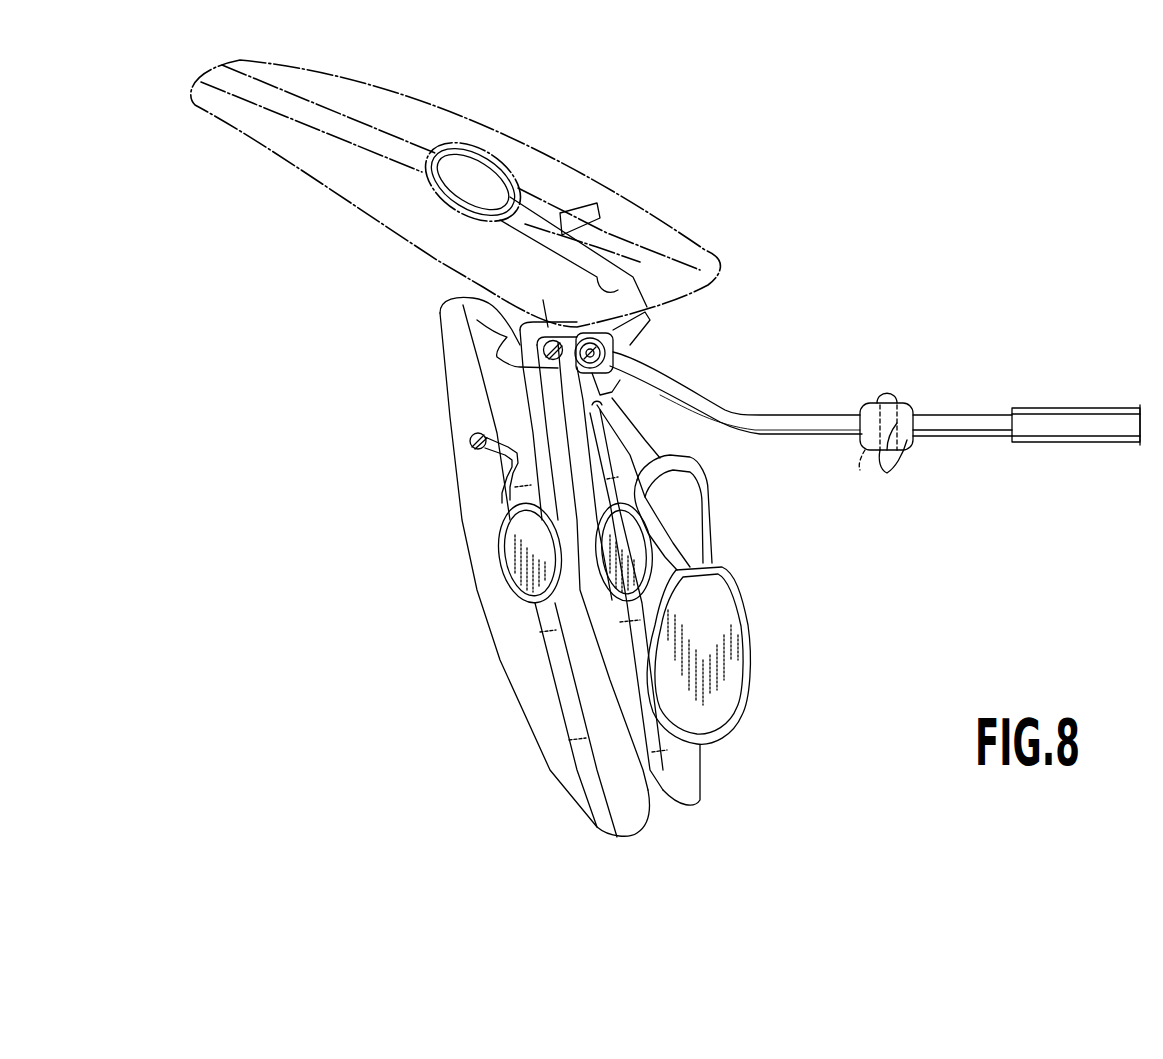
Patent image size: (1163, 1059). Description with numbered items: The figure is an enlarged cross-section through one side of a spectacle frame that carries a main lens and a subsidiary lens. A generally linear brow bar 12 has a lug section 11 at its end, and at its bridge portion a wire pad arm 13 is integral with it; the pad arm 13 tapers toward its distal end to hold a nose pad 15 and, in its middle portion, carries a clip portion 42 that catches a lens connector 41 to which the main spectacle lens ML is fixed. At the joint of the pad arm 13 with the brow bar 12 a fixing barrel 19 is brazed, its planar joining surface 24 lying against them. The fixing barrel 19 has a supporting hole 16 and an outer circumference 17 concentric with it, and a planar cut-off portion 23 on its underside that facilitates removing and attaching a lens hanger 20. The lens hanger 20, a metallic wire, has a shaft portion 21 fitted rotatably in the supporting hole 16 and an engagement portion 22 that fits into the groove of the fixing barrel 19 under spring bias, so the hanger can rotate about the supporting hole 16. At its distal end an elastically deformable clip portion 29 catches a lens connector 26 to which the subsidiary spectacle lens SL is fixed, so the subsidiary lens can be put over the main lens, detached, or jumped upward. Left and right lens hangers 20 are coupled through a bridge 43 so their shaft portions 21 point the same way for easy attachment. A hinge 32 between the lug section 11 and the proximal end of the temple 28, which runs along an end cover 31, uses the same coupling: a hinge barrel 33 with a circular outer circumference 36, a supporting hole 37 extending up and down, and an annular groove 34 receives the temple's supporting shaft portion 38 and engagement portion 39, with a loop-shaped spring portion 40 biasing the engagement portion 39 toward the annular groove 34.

The lug section 11 is at (768, 412).
The brow bar 12 is at (455, 317).
The pad arm 13 is at (712, 535).
The nose pad 15 is at (745, 655).
The supporting hole 16 is at (617, 345).
The outer circumference 17 is at (614, 358).
The fixing barrel 19 is at (600, 290).
The lens hanger 20 is at (543, 300).
The shaft portion 21 is at (622, 578).
The engagement portion 22 is at (640, 325).
The cut-off portion 23 is at (608, 368).
The joining surface 24 is at (535, 351).
The lens connector 26 is at (628, 570).
The temple 28 is at (973, 412).
The clip portion 29 is at (672, 482).
The end cover 31 is at (1092, 410).
The hinge 32 is at (904, 320).
The hinge barrel 33 is at (867, 403).
The annular groove 34 is at (910, 413).
The outer circumference 36 is at (910, 400).
The supporting hole 37 is at (866, 455).
The supporting shaft portion 38 is at (894, 395).
The engagement portion 39 is at (906, 456).
The spring portion 40 is at (891, 476).
The lens connector 41 is at (520, 565).
The clip portion 42 is at (530, 605).
The bridge 43 is at (473, 433).
The subsidiary spectacle lens SL is at (568, 782).
The main spectacle lens ML is at (690, 785).